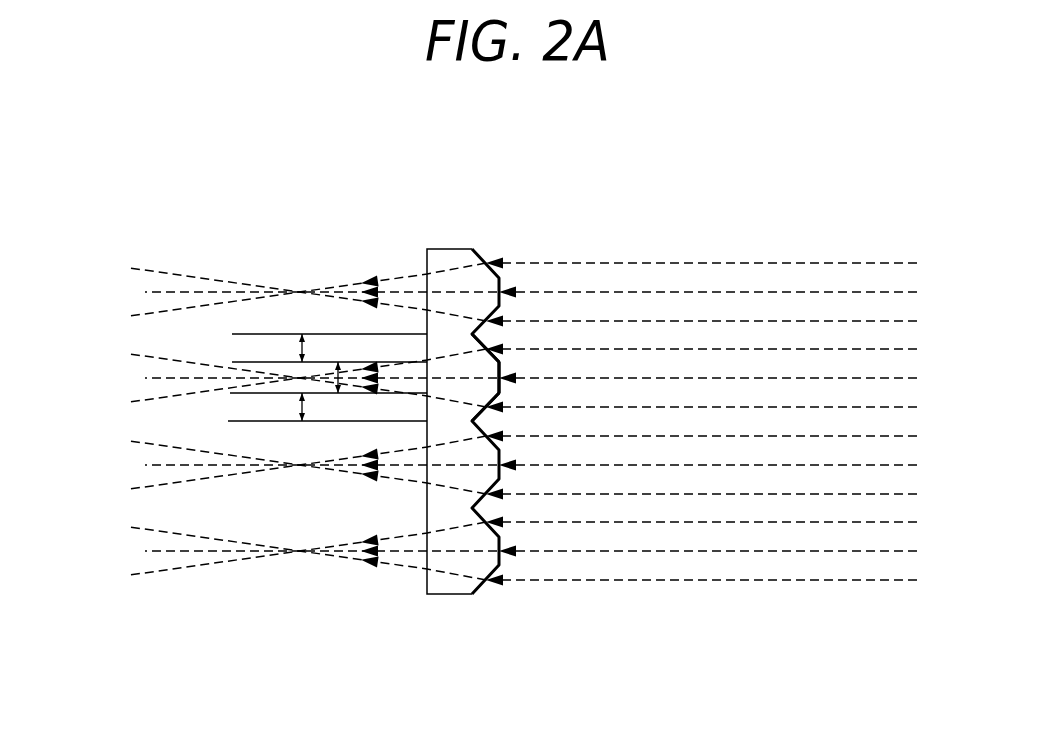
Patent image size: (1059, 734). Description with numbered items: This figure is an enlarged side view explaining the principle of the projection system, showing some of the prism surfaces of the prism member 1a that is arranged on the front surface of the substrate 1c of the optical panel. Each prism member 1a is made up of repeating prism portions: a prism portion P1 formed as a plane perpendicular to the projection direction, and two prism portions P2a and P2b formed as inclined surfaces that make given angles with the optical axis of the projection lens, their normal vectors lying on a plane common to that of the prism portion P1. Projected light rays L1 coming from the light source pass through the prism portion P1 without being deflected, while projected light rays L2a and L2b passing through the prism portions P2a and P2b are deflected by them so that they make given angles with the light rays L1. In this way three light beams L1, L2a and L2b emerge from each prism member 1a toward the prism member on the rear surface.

The prism member 1a is at (642, 135).
The substrate 1c is at (444, 256).
The prism portion P1 is at (500, 281).
The prism portion P2a is at (482, 258).
The prism portion P2b is at (482, 326).
The projected light rays L1 is at (745, 378).
The projected light rays L2a is at (840, 408).
The projected light rays L2b is at (643, 350).